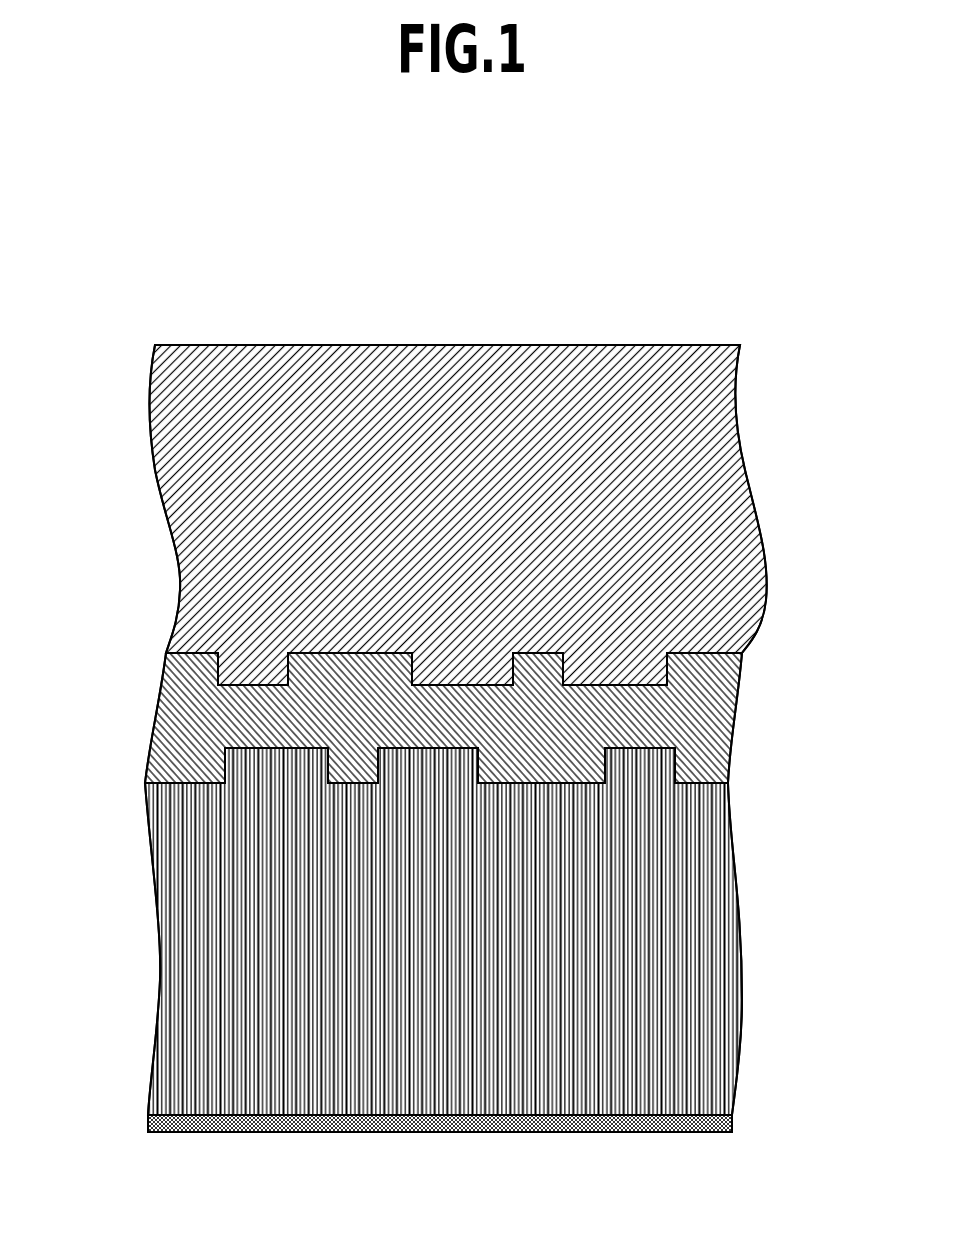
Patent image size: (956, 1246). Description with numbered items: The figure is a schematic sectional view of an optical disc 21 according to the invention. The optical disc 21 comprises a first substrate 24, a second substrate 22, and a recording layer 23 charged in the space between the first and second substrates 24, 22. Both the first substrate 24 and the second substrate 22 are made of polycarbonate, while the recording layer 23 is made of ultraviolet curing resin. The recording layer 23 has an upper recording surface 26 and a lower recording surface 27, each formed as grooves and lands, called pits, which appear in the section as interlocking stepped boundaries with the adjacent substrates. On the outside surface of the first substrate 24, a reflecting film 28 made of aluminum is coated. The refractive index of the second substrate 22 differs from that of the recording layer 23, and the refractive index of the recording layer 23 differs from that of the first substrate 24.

The optical disc 21 is at (498, 342).
The second substrate 22 is at (718, 518).
The recording layer 23 is at (713, 708).
The first substrate 24 is at (655, 887).
The upper recording surface 26 is at (183, 660).
The lower recording surface 27 is at (685, 780).
The reflecting film 28 is at (670, 1105).